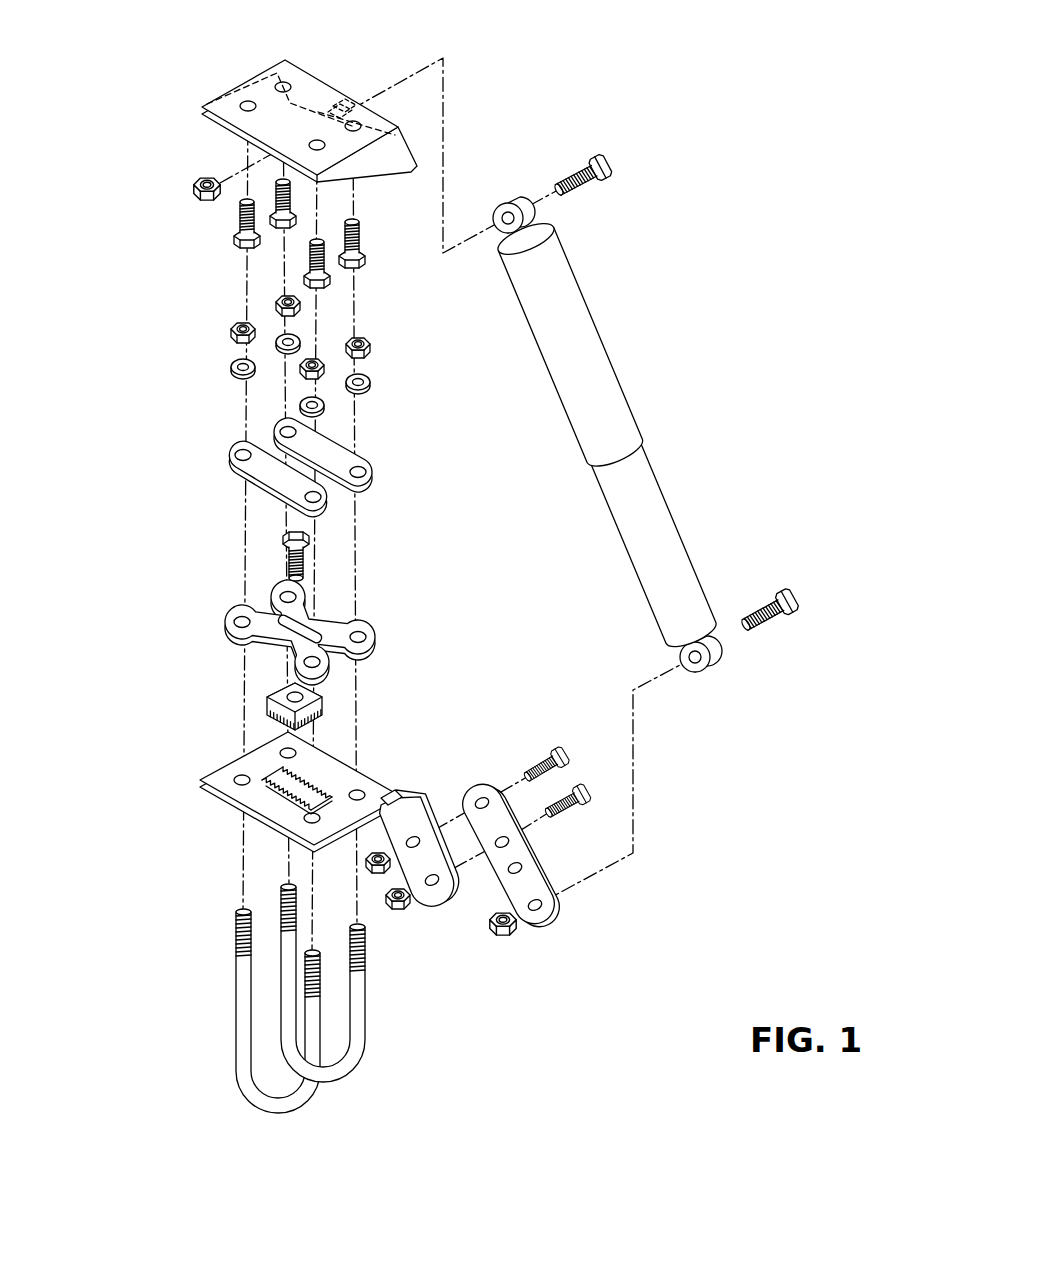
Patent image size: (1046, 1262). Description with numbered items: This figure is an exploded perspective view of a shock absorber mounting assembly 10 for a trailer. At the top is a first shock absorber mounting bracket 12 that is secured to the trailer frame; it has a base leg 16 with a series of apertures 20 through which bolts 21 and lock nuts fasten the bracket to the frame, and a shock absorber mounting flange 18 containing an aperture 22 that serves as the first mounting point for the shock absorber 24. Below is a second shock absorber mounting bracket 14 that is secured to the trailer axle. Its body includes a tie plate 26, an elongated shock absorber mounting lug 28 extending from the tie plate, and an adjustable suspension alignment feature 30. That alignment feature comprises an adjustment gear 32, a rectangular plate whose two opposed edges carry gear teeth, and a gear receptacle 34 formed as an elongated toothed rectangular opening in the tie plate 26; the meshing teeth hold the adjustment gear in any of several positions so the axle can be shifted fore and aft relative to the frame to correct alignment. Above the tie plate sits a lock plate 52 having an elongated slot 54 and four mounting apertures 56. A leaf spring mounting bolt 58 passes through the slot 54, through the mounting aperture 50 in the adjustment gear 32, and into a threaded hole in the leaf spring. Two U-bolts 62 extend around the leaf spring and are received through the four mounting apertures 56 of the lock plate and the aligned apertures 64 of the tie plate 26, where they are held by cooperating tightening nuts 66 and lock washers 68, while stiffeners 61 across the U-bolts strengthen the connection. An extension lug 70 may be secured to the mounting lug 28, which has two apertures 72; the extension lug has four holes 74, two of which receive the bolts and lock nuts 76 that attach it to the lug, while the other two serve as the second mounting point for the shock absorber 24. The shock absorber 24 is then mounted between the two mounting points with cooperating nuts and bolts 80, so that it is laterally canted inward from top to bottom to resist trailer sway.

The shock absorber mounting assembly 10 is at (650, 116).
The first shock absorber mounting bracket 12 is at (190, 88).
The second shock absorber mounting bracket 14 is at (227, 888).
The base leg 16 is at (306, 95).
The shock absorber mounting flange 18 is at (392, 152).
The apertures 20 is at (282, 83).
The bolts 21 is at (288, 224).
The aperture 22 is at (356, 104).
The shock absorber 24 is at (613, 380).
The tie plate 26 is at (218, 800).
The elongated shock absorber mounting lug 28 is at (413, 805).
The adjustable suspension alignment feature 30 is at (437, 700).
The adjustment gear 32 is at (319, 703).
The gear receptacle 34 is at (321, 792).
The mounting aperture 50 is at (285, 692).
The lock plate 52 is at (320, 623).
The elongated slot 54 is at (290, 635).
The mounting apertures 56 is at (286, 592).
The leaf spring mounting bolt 58 is at (285, 528).
The stiffeners 61 is at (231, 456).
The U-bolts 62 is at (238, 1040).
The apertures 64 is at (285, 750).
The tightening nuts 66 is at (279, 297).
The lock washer 68 is at (286, 352).
The extension lug 70 is at (545, 866).
The apertures 72 is at (421, 837).
The holes 74 is at (496, 841).
The bolts and lock nuts 76 is at (566, 761).
The nuts and bolts 80 is at (198, 198).